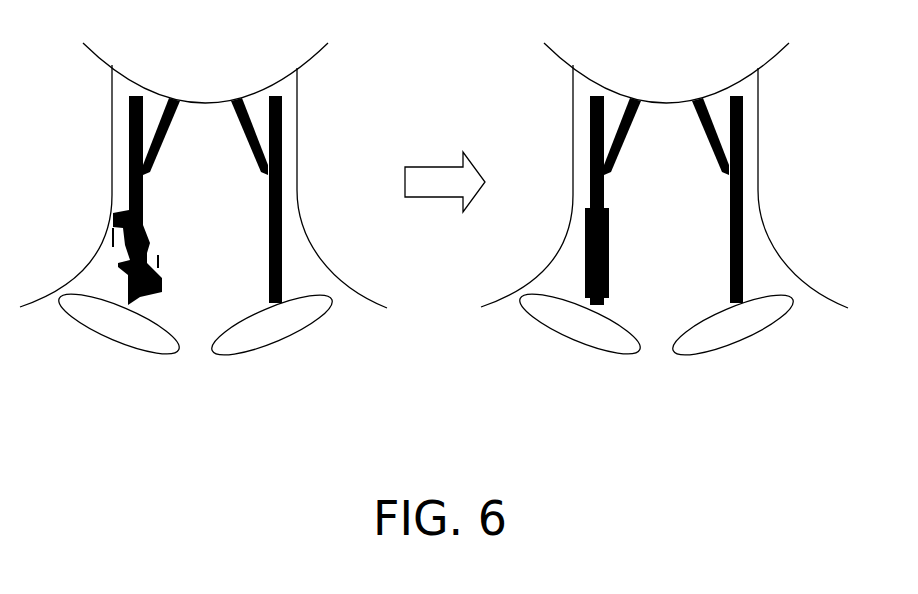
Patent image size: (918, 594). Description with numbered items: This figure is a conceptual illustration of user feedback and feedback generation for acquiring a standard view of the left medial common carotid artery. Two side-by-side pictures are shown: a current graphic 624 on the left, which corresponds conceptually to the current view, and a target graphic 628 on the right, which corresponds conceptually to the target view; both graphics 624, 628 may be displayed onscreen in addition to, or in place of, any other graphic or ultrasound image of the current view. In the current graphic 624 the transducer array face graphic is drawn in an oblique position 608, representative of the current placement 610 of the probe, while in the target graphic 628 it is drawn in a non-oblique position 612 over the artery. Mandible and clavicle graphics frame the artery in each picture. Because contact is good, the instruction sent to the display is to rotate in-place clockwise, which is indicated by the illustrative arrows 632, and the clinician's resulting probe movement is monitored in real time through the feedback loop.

The oblique position 608 is at (152, 242).
The current placement 610 is at (163, 282).
The non-oblique position 612 is at (612, 242).
The current graphic 624 is at (205, 233).
The target graphic 628 is at (664, 233).
The illustrative arrows 632 is at (113, 230).